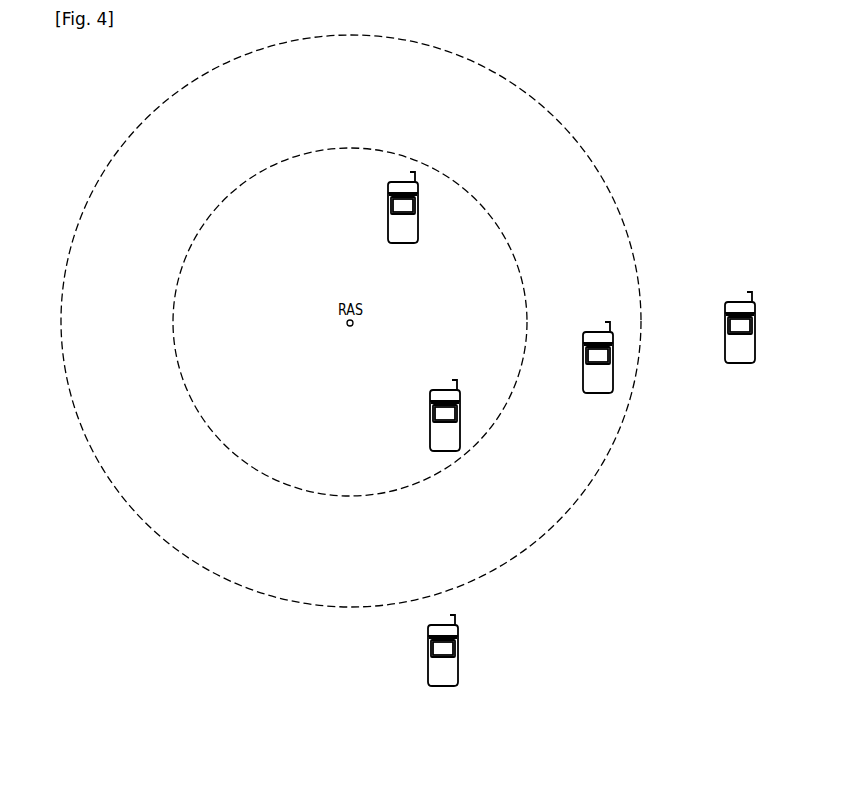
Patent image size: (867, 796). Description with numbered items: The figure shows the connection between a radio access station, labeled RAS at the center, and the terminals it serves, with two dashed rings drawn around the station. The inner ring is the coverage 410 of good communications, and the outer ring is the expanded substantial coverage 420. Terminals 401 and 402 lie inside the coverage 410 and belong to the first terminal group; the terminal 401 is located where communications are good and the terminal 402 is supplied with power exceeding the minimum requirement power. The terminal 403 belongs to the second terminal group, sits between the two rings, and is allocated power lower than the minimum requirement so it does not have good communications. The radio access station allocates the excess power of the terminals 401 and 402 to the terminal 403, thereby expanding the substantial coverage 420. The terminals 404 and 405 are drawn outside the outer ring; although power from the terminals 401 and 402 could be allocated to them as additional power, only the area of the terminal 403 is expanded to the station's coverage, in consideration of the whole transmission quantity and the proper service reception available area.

The terminal 401 is at (419, 210).
The terminal 402 is at (428, 411).
The terminal 403 is at (582, 372).
The terminal 404 is at (737, 300).
The terminal 405 is at (460, 647).
The coverage 410 is at (502, 232).
The substantial coverage 420 is at (635, 387).